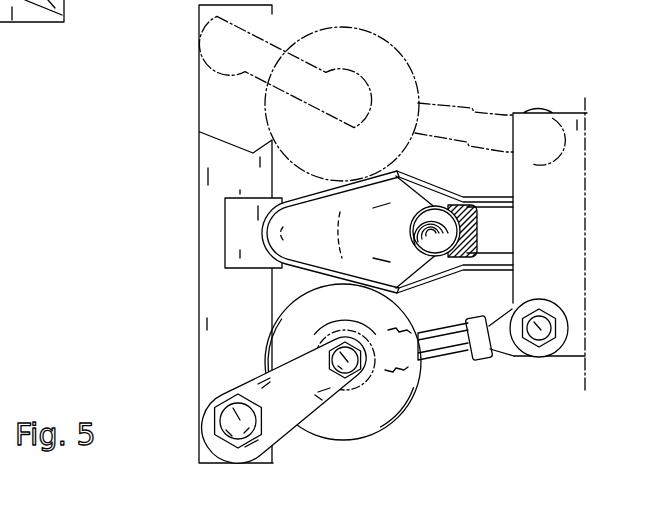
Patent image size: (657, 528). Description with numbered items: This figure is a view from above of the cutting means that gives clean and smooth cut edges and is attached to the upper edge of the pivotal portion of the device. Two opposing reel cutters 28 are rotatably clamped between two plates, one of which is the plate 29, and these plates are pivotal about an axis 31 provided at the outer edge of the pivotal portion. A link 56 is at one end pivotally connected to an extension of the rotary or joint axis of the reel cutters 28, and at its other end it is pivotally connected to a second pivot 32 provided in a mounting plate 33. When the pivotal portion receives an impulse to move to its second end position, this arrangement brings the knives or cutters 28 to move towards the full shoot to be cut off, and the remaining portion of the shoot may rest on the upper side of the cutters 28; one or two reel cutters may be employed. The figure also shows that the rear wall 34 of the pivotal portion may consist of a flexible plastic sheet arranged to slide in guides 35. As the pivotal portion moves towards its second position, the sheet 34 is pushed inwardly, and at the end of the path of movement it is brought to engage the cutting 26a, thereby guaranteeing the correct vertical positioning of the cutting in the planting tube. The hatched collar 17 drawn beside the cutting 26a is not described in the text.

The threaded spindle / collar 17 is at (473, 223).
The cutting 26a is at (440, 242).
The reel cutter 28 is at (388, 395).
The plate 29 is at (285, 420).
The axis 31 is at (216, 405).
The second pivot 32 is at (537, 340).
The mounting plate 33 is at (564, 203).
The rear wall 34 is at (322, 186).
The guides 35 is at (414, 171).
The link 56 is at (460, 345).